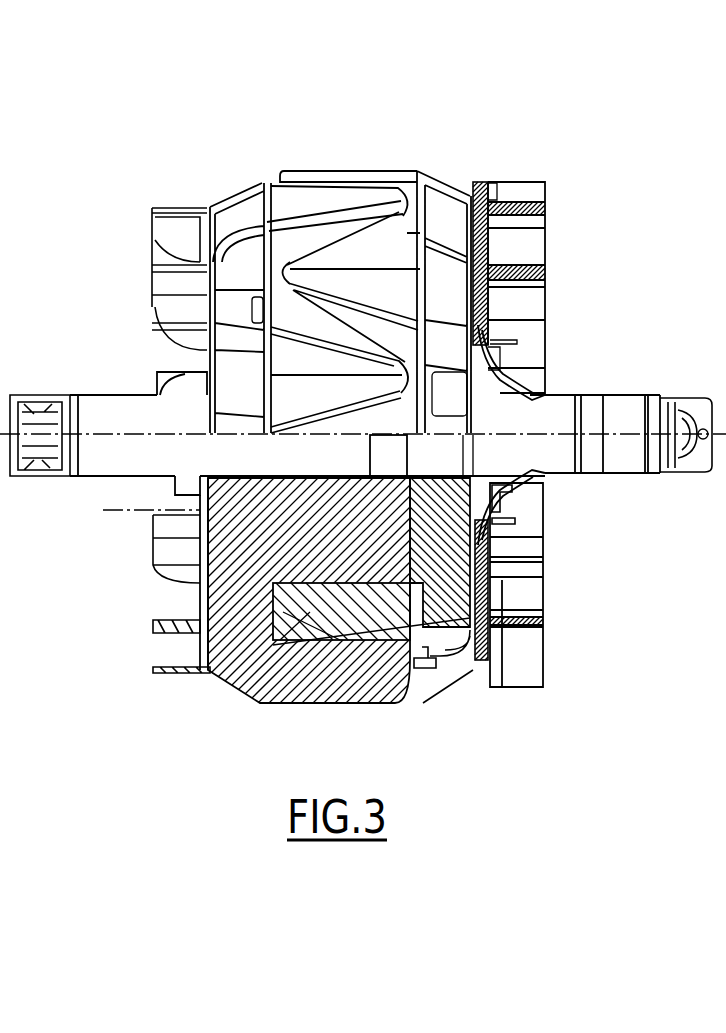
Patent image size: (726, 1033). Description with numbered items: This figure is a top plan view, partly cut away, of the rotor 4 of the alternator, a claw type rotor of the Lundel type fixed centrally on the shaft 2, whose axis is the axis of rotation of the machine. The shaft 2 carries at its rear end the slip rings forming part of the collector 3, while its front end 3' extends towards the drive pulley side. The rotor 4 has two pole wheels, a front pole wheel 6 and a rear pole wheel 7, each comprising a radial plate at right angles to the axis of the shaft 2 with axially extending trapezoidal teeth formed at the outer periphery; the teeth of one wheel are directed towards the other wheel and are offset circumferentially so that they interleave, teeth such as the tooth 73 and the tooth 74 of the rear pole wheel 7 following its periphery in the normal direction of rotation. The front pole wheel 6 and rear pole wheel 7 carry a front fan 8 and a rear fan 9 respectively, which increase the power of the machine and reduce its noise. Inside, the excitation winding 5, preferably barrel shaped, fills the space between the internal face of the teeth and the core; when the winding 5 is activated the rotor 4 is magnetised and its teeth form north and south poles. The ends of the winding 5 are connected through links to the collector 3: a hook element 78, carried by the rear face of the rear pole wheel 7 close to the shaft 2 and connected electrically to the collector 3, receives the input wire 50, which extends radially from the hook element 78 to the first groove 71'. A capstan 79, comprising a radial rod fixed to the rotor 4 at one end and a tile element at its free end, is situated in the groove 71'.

The shaft 2 is at (118, 410).
The collector 3 is at (621, 383).
The shaft end 3' is at (35, 382).
The rotor 4 is at (486, 156).
The excitation winding 5 is at (238, 692).
The front pole wheel 6 is at (238, 206).
The rear pole wheel 7 is at (438, 278).
The front fan 8 is at (177, 210).
The rear fan 9 is at (481, 184).
The input wire 50 is at (505, 522).
The first groove 71' is at (505, 684).
The tooth 73 is at (391, 257).
The tooth 74 is at (345, 178).
The hook element 78 is at (498, 518).
The capstan 79 is at (427, 670).